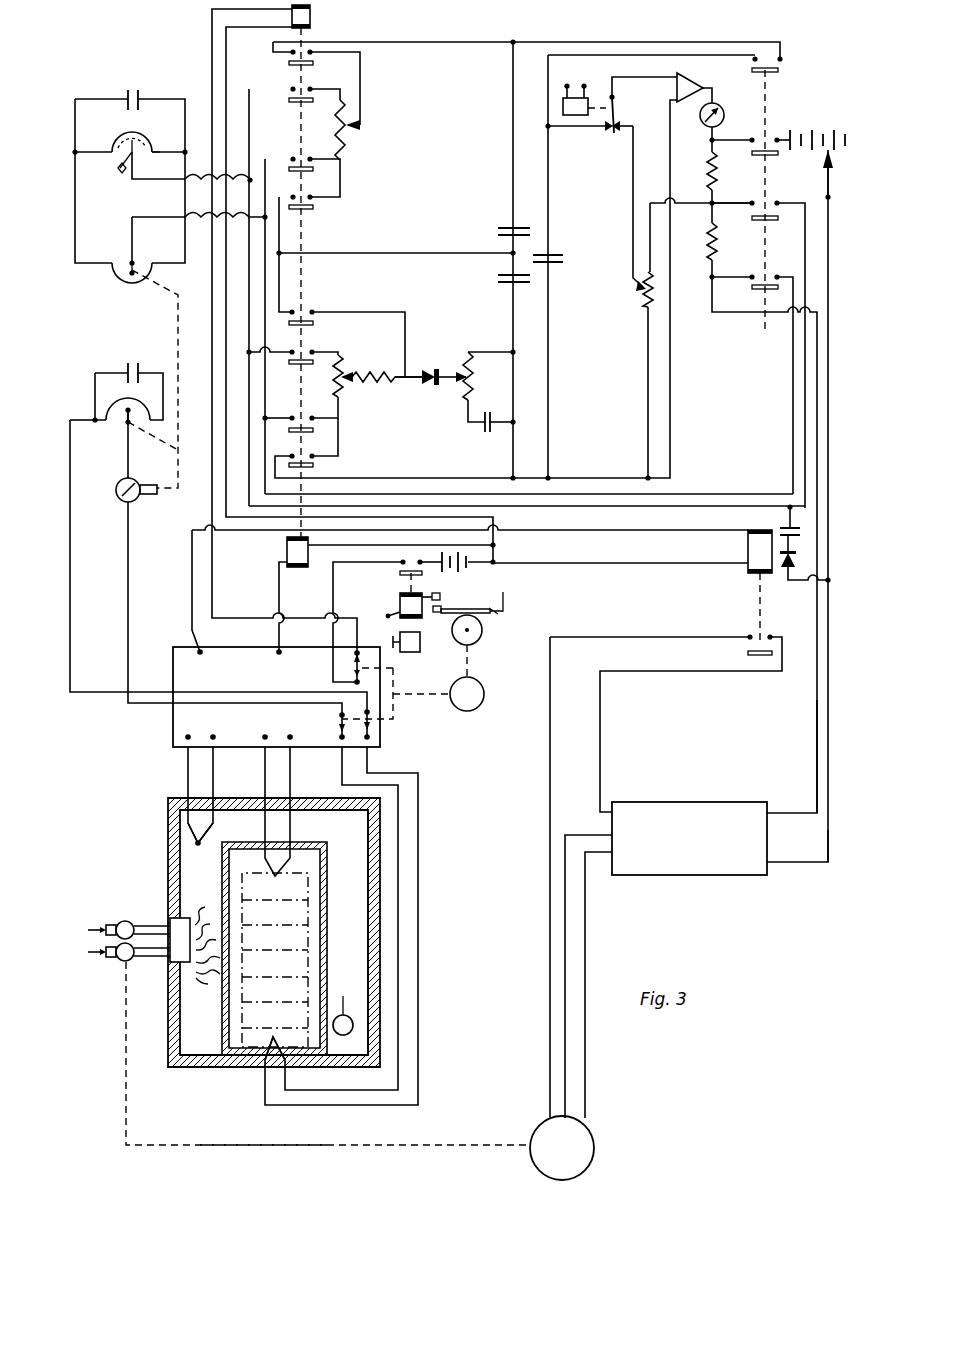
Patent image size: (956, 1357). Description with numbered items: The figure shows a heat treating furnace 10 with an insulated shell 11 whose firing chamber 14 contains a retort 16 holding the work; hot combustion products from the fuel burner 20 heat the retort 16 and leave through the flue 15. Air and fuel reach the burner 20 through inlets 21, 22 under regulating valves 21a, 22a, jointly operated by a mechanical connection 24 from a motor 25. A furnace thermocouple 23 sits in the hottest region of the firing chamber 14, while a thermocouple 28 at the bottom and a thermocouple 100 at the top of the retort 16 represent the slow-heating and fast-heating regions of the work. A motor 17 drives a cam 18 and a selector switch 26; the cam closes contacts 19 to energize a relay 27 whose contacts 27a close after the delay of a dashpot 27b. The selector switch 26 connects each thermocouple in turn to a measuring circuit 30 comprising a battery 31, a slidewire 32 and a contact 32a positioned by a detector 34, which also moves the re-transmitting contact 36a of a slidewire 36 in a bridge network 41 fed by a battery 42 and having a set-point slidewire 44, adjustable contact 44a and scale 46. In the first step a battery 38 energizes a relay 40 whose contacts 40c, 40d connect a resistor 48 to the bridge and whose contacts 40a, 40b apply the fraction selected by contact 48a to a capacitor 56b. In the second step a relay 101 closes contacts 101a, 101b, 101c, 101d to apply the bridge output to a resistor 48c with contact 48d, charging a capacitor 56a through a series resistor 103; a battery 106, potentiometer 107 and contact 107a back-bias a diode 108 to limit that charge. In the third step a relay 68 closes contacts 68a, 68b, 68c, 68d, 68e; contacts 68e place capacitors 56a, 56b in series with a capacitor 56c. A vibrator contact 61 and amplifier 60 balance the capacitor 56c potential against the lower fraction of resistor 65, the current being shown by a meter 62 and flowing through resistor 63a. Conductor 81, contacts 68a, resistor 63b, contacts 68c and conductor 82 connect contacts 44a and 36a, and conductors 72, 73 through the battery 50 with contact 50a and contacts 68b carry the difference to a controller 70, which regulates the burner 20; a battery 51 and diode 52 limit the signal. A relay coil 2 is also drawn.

The relay coil 2 is at (570, 92).
The heat treating furnace 10 is at (152, 859).
The insulated shell 11 is at (378, 970).
The firing chamber 14 is at (350, 832).
The flue 15 is at (344, 1006).
The retort 16 is at (327, 892).
The motor 17 is at (478, 708).
The cam 18 is at (482, 634).
The contacts 19 is at (441, 600).
The fuel burner 20 is at (186, 950).
The air inlet 21 is at (108, 924).
The air regulating valve 21a is at (128, 920).
The fuel inlet 22 is at (108, 958).
The fuel regulating valve 22a is at (128, 962).
The furnace thermocouple 23 is at (200, 847).
The mechanical connection 24 is at (380, 1150).
The motor 25 is at (585, 1148).
The selector switch 26 is at (173, 717).
The relay 27 is at (398, 604).
The relay contacts 27a is at (398, 572).
The dashpot 27b is at (405, 652).
The thermocouple 28 is at (272, 1035).
The temperature measuring circuit 30 is at (68, 384).
The battery 31 is at (134, 366).
The slidewire 32 is at (108, 412).
The contact 32a is at (124, 420).
The detector 34 is at (134, 500).
The re-transmitting slidewire 36 is at (110, 282).
The re-transmitting contact 36a is at (130, 262).
The battery 38 is at (500, 566).
The relay 40 is at (310, 14).
The relay contact 40a is at (289, 62).
The relay contact 40b is at (289, 96).
The relay contact 40c is at (293, 159).
The relay contact 40d is at (313, 207).
The bridge network 41 is at (110, 211).
The battery 42 is at (125, 88).
The slidewire 44 is at (108, 141).
The adjustable contact 44a is at (134, 158).
The scale 46 is at (163, 129).
The resistor 48 is at (345, 140).
The adjustable contact 48a is at (352, 128).
The resistor 48c is at (362, 383).
The adjustable contact 48d is at (355, 372).
The battery 50 is at (822, 130).
The adjustable contact 50a is at (824, 190).
The battery 51 is at (778, 528).
The diode 52 is at (783, 568).
The capacitor 56a is at (497, 284).
The capacitor 56b is at (496, 229).
The capacitor 56c is at (553, 254).
The amplifier 60 is at (693, 80).
The vibrator contact 61 is at (618, 110).
The current responsive meter 62 is at (723, 108).
The resistor 63a is at (705, 170).
The resistor 63b is at (705, 245).
The resistor 65 is at (640, 297).
The relay 68 is at (748, 550).
The relay contact 68a is at (758, 210).
The relay contact 68b is at (770, 130).
The relay contact 68c is at (758, 280).
The relay contact 68d is at (750, 634).
The relay contacts 68e is at (782, 62).
The controller 70 is at (702, 812).
The conductor 72 is at (816, 717).
The conductor 73 is at (800, 870).
The conductor 81 is at (254, 290).
The conductor 82 is at (265, 268).
The thermocouple 100 is at (275, 960).
The relay 101 is at (287, 552).
The relay contact 101a is at (313, 308).
The relay contact 101b is at (305, 345).
The relay contact 101c is at (314, 410).
The relay contact 101d is at (313, 460).
The series resistor 103 is at (392, 383).
The battery 106 is at (487, 434).
The potentiometer 107 is at (472, 376).
The movable contact 107a is at (462, 372).
The diode 108 is at (432, 368).